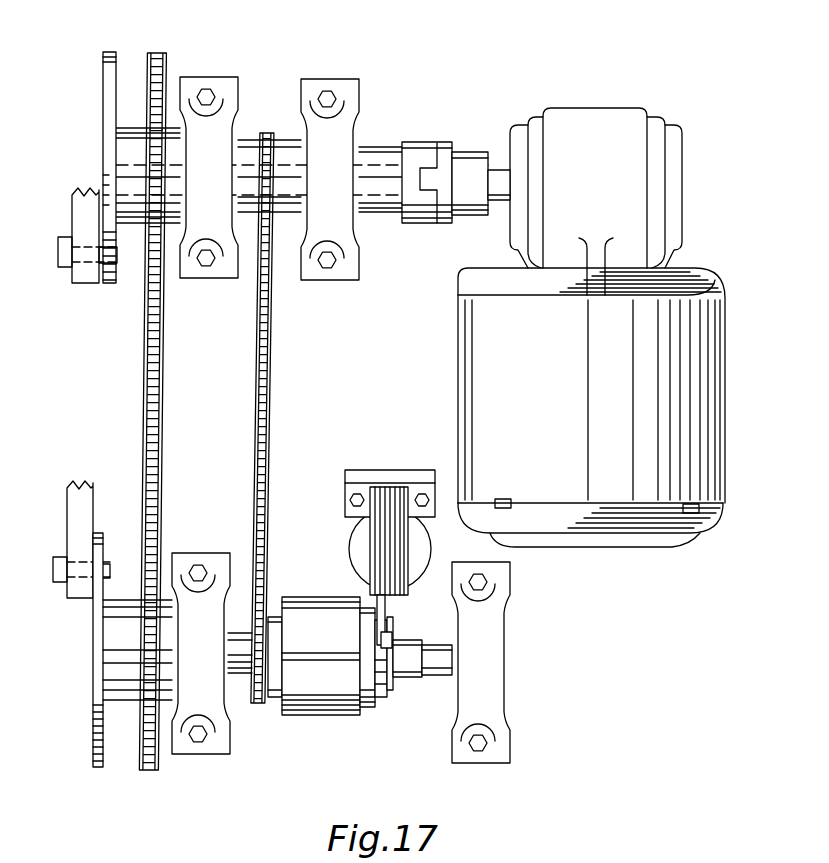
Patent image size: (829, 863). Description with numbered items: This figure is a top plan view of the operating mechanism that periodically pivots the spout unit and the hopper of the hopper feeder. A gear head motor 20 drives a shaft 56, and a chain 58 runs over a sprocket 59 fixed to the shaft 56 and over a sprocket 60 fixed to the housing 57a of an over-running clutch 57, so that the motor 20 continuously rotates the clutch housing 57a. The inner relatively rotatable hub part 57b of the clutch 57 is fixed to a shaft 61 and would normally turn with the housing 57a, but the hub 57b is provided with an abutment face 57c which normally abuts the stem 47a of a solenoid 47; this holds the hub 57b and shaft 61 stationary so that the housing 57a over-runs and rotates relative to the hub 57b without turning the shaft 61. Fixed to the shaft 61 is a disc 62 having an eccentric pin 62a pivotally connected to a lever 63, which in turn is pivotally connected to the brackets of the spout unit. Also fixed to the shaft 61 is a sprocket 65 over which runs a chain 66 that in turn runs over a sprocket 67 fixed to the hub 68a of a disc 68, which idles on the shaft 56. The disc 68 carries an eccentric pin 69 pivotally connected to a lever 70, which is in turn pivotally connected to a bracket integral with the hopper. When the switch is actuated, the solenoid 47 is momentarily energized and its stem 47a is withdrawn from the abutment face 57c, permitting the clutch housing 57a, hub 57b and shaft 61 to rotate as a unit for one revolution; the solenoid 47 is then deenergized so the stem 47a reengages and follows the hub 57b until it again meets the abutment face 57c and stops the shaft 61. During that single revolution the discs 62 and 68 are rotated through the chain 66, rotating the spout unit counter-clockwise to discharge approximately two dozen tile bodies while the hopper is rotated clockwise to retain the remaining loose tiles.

The gear head motor 20 is at (727, 378).
The shaft 56 is at (390, 152).
The sprocket 59 is at (278, 147).
The chain 58 is at (274, 378).
The sprocket 60 is at (259, 690).
The shaft 61 is at (235, 680).
The sprocket 67 is at (152, 88).
The chain 66 is at (149, 378).
The disc 68 is at (107, 108).
The hub 68a is at (115, 232).
The lever 70 is at (72, 228).
The eccentric pin 69 is at (58, 257).
The sprocket 65 is at (140, 632).
The lever 63 is at (67, 525).
The eccentric pin 62a is at (60, 585).
The disc 62 is at (93, 750).
The over-running clutch 57 is at (360, 679).
The clutch housing 57a is at (310, 712).
The hub 57b is at (383, 697).
The abutment face 57c is at (392, 642).
The solenoid 47 is at (417, 470).
The stem 47a is at (387, 612).